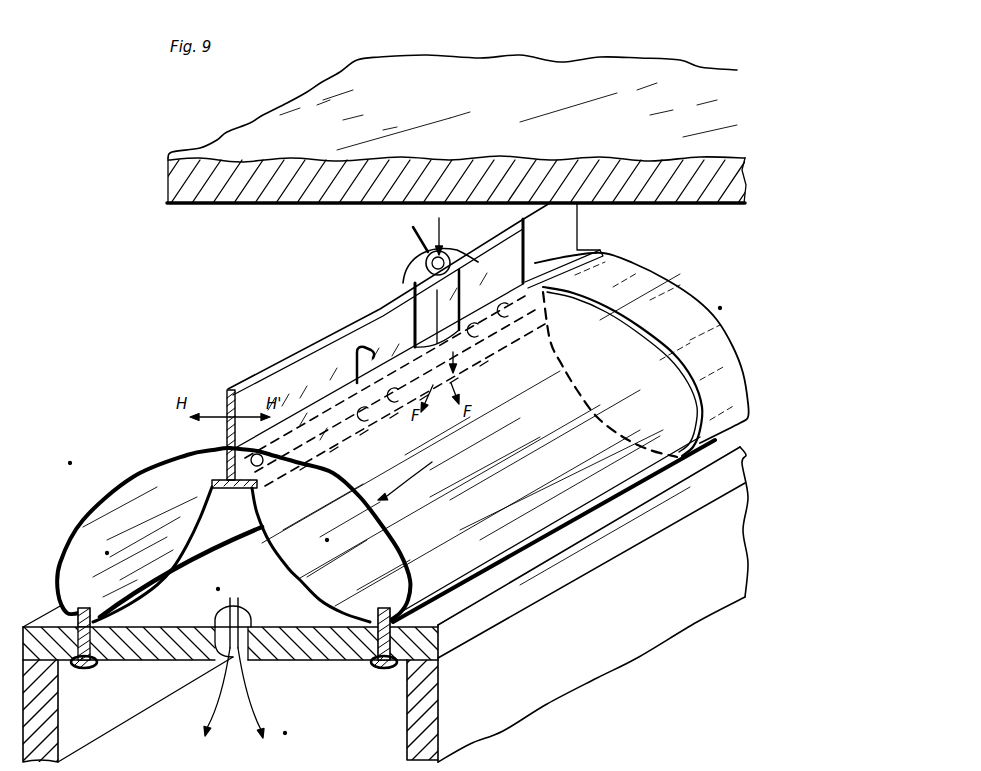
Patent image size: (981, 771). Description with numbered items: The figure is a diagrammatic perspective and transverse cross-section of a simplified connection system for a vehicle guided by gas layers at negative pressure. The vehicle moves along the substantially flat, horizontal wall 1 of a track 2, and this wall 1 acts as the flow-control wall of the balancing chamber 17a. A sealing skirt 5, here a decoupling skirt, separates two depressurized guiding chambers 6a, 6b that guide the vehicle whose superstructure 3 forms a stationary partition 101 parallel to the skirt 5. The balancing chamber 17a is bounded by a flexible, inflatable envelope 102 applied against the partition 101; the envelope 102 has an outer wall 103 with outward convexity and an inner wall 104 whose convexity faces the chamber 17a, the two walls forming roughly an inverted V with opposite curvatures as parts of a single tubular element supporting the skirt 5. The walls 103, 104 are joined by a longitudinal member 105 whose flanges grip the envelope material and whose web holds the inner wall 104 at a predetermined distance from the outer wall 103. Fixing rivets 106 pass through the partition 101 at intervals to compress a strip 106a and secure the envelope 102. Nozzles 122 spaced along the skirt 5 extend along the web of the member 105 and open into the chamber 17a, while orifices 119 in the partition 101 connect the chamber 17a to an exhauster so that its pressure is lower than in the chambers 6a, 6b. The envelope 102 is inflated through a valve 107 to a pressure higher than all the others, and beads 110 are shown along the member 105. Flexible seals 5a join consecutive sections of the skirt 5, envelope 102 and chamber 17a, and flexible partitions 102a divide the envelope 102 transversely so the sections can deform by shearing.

The wall 1 is at (354, 205).
The track 2 is at (470, 180).
The superstructure 3 is at (440, 692).
The sealing skirt 5 is at (226, 401).
The flexible seals 5a is at (530, 244).
The depressurized chamber 6a is at (118, 407).
The depressurized chamber 6b is at (700, 272).
The balancing chamber 17a is at (273, 612).
The stationary partition 101 is at (310, 647).
The flexible and inflatable envelope 102 is at (418, 468).
The flexible partitions 102a is at (647, 328).
The outer wall 103 is at (360, 486).
The inner wall 104 is at (280, 563).
The longitudinal member 105 is at (152, 554).
The fixing rivets 106 is at (83, 670).
The strip 106a is at (97, 607).
The valve 107 is at (353, 350).
The clamping beads 110 is at (390, 423).
The orifices 119 is at (213, 625).
The nozzles 122 is at (447, 290).